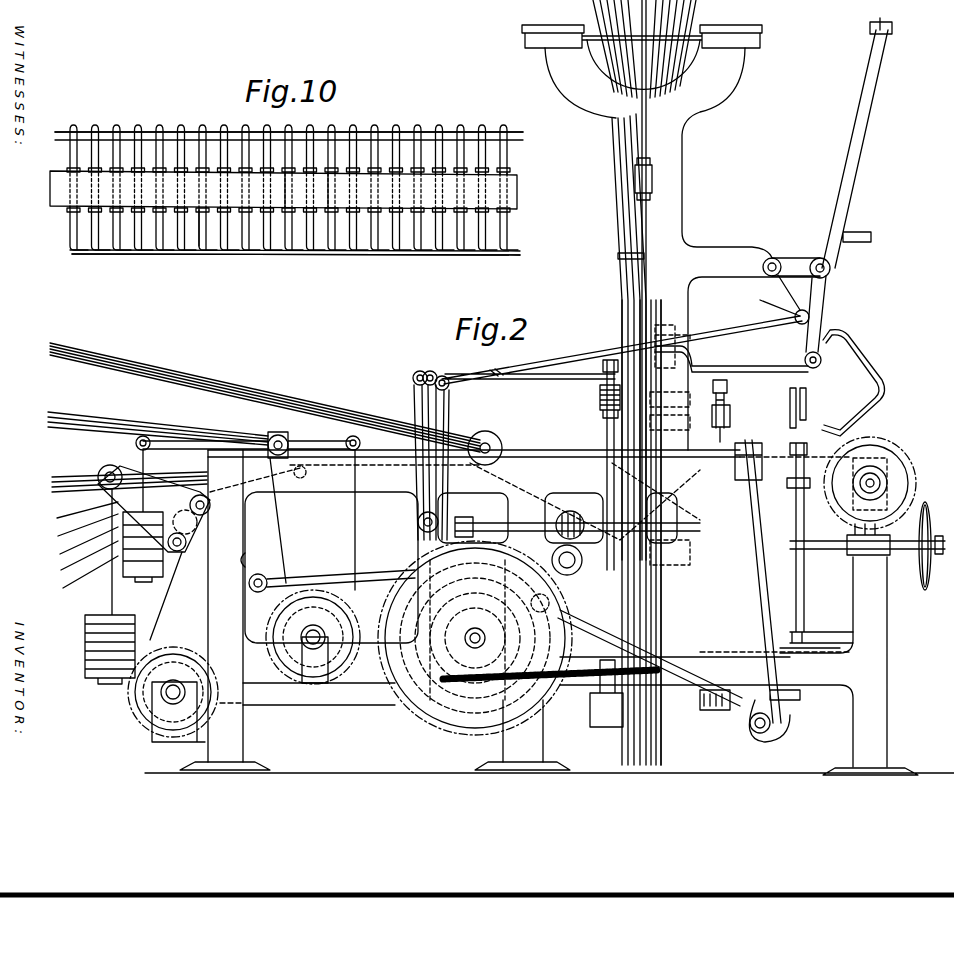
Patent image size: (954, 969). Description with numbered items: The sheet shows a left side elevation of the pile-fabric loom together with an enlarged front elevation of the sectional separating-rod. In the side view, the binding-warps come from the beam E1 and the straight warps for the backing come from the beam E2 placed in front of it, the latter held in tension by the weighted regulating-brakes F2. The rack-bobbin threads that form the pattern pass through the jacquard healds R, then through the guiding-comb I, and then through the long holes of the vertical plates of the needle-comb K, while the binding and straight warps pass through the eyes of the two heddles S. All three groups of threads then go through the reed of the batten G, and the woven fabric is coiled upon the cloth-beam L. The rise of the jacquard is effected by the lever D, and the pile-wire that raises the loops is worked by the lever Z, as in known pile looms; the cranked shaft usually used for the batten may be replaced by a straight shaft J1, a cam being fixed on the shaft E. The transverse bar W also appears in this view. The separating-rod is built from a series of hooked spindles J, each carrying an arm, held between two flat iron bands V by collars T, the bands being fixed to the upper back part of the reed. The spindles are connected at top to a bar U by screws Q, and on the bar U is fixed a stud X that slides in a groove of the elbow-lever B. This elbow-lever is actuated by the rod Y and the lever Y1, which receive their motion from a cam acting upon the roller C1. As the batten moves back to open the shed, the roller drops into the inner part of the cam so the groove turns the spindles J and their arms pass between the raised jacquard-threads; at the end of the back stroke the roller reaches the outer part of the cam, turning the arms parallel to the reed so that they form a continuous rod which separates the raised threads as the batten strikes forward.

In FIG. 10, the screws Q is at (78, 127).
In FIG. 10, the flat iron bands V is at (300, 140).
In FIG. 10, the collars T is at (333, 224).
In FIG. 10, the hooked spindles J is at (210, 215).
In FIG. 2, the lever Z is at (857, 143).
In FIG. 2, the jacquard healds R is at (625, 421).
In FIG. 2, the rod Y is at (622, 350).
In FIG. 2, the stud X is at (716, 371).
In FIG. 2, the elbow-lever B is at (759, 403).
In FIG. 2, the bar U is at (731, 405).
In FIG. 2, the batten G is at (725, 423).
In FIG. 2, the needle-comb K is at (735, 462).
In FIG. 2, the transverse bar W is at (644, 532).
In FIG. 2, the heddles S is at (605, 465).
In FIG. 2, the cloth-beam L is at (867, 513).
In FIG. 2, the weighted regulating-brakes F2 is at (248, 504).
In FIG. 2, the guiding-comb I is at (140, 484).
In FIG. 2, the beam E1 is at (173, 694).
In FIG. 2, the beam E2 is at (313, 637).
In FIG. 2, the shaft E is at (477, 632).
In FIG. 2, the frame disc A is at (475, 638).
In FIG. 2, the roller C1 is at (464, 630).
In FIG. 2, the lever D is at (650, 655).
In FIG. 2, the straight shaft J1 is at (578, 578).
In FIG. 2, the lever Y1 is at (412, 380).